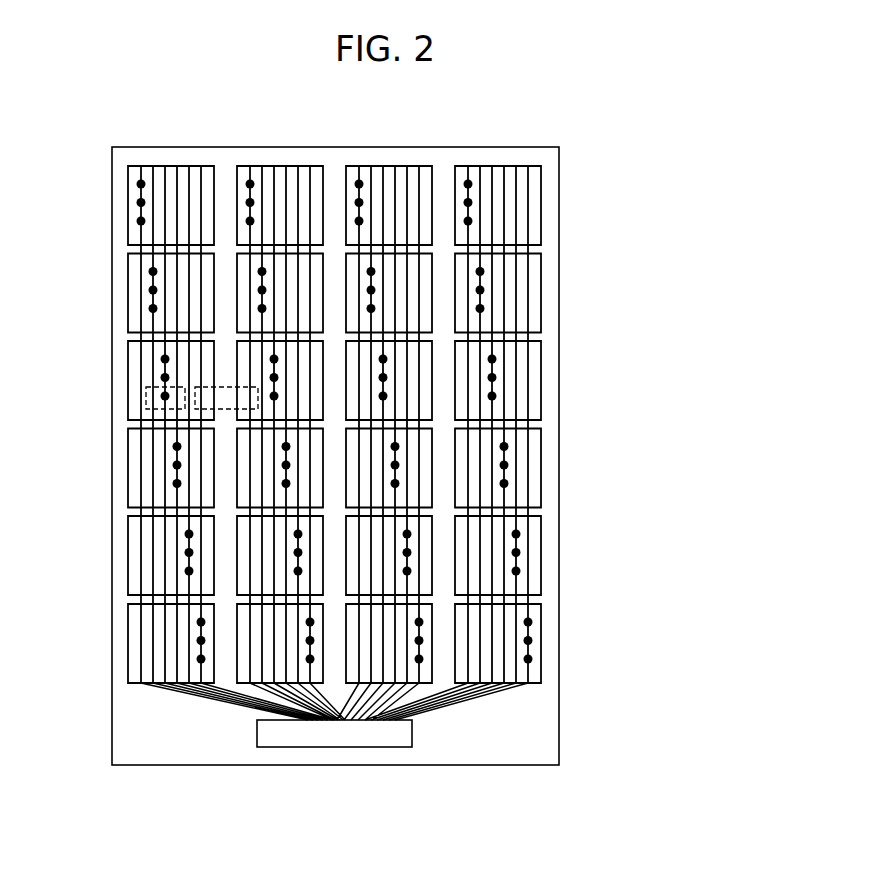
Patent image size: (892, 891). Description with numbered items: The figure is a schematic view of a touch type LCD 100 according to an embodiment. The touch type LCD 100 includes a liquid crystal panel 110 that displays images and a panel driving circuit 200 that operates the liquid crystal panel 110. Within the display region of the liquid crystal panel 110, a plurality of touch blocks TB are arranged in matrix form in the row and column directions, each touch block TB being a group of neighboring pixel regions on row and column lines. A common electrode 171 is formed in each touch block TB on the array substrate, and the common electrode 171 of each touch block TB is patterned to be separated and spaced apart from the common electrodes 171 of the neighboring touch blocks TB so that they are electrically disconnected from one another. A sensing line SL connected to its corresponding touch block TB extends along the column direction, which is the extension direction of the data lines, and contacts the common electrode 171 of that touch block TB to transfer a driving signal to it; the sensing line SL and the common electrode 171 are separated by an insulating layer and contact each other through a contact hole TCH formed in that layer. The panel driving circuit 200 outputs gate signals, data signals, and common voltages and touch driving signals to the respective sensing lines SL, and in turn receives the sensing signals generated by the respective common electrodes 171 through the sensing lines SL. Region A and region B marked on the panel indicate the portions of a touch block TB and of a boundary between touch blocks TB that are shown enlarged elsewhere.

The touch type LCD 100 is at (344, 101).
The liquid crystal panel 110 is at (558, 337).
The common electrode 171 is at (541, 210).
The touch block TB is at (583, 205).
The sensing line SL is at (528, 266).
The contact hole TCH is at (482, 288).
The region A is at (146, 396).
The region B is at (227, 387).
The panel driving circuit 200 is at (335, 747).